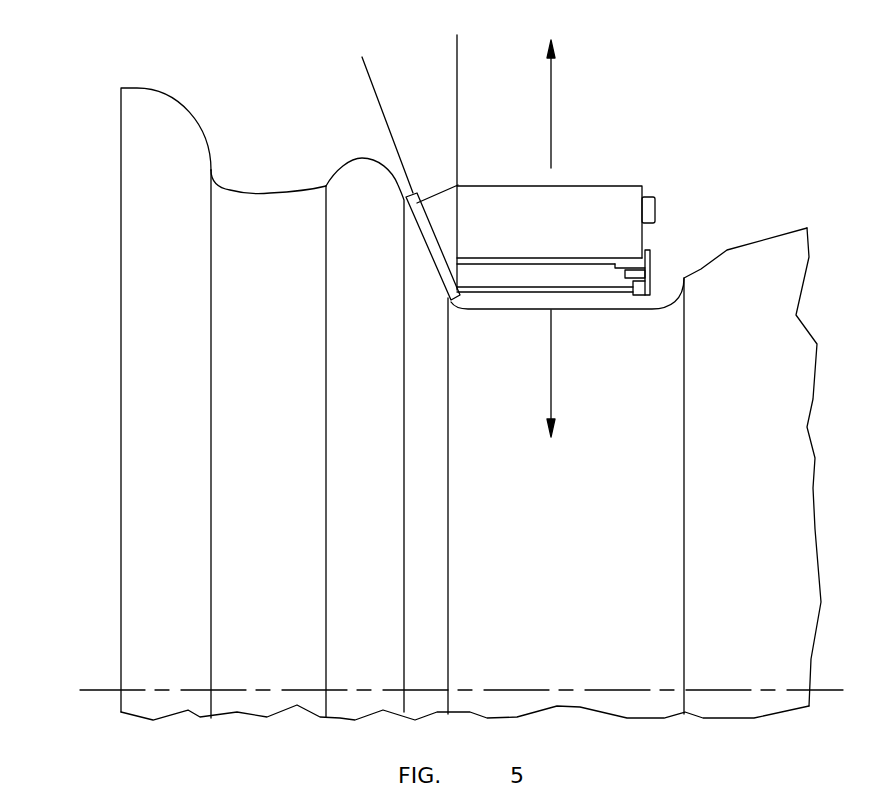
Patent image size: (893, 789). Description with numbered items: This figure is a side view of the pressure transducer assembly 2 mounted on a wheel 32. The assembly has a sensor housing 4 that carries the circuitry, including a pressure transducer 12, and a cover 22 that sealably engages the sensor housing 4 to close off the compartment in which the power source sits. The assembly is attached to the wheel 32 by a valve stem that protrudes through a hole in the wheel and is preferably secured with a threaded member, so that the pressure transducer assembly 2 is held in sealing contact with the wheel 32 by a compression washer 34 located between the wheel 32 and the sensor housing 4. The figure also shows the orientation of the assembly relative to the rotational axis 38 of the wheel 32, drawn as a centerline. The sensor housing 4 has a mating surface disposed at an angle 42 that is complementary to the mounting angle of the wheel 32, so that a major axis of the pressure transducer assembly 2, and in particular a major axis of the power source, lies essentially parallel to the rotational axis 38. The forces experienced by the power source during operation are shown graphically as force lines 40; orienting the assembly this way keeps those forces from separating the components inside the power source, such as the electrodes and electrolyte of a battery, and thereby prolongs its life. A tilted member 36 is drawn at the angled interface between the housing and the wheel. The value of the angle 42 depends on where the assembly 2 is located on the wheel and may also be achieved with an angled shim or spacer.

The pressure transducer assembly 2 is at (616, 182).
The sensor housing 4 is at (493, 202).
The pressure transducer 12 is at (655, 213).
The cover 22 is at (652, 276).
The wheel 32 is at (268, 192).
The compression washer 34 is at (415, 194).
The cam member 36 is at (450, 205).
The rotational axis 38 is at (102, 690).
The force lines 40 is at (551, 101).
The angle 42 is at (455, 39).